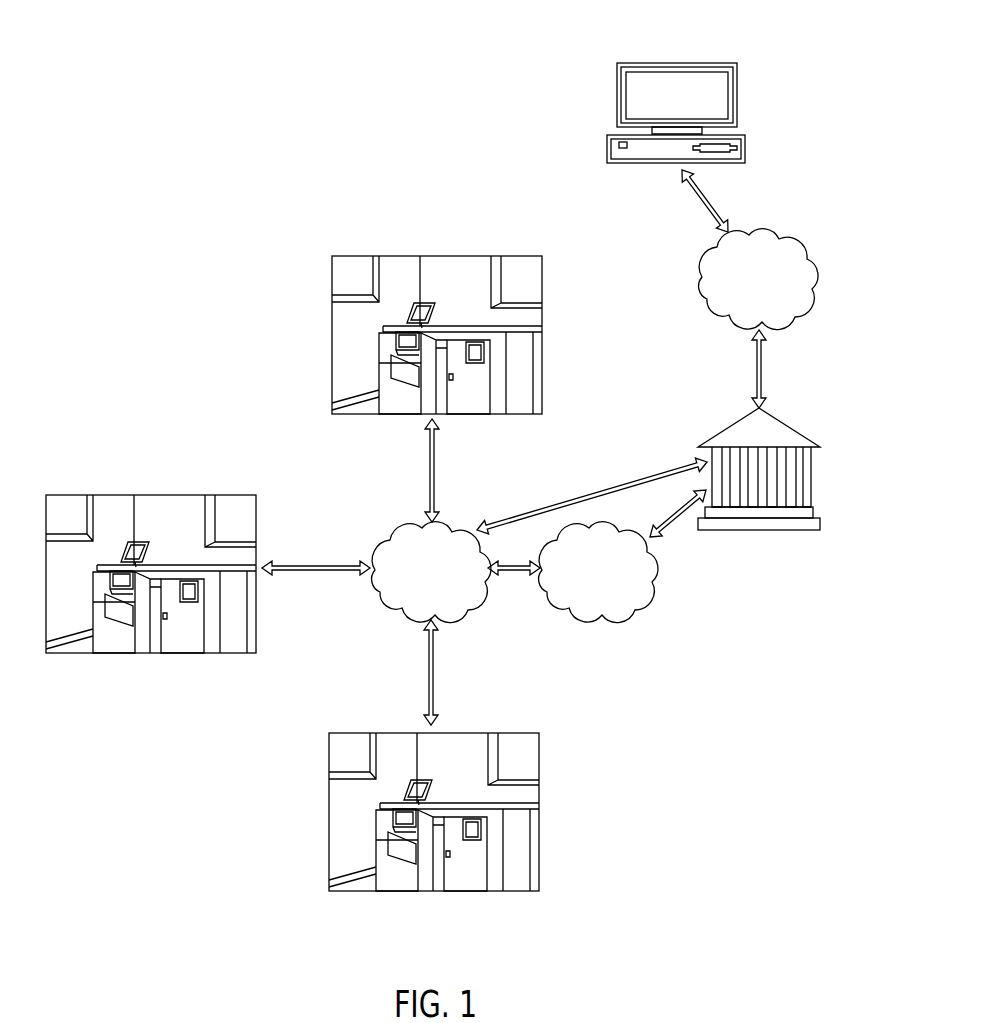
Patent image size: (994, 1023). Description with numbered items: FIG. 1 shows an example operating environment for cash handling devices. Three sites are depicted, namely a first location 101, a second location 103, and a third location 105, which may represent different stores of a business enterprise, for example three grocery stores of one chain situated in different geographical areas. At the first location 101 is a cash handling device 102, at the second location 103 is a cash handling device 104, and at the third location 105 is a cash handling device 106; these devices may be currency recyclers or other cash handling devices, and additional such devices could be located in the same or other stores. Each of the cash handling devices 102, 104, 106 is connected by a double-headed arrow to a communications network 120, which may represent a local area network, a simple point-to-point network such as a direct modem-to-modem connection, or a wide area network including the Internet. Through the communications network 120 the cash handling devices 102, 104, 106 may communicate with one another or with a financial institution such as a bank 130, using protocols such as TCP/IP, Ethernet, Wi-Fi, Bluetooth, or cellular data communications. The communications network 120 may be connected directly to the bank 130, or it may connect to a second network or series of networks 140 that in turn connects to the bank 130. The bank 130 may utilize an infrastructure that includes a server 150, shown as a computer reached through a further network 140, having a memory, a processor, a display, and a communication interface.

The location 101 is at (450, 263).
The cash handling device 102 is at (399, 403).
The location 103 is at (166, 502).
The cash handling device 104 is at (112, 638).
The location 105 is at (339, 799).
The cash handling device 106 is at (403, 878).
The communications network 120 is at (466, 604).
The bank 130 is at (733, 425).
The second network or series of networks 140 is at (598, 615).
The server 150 is at (707, 62).